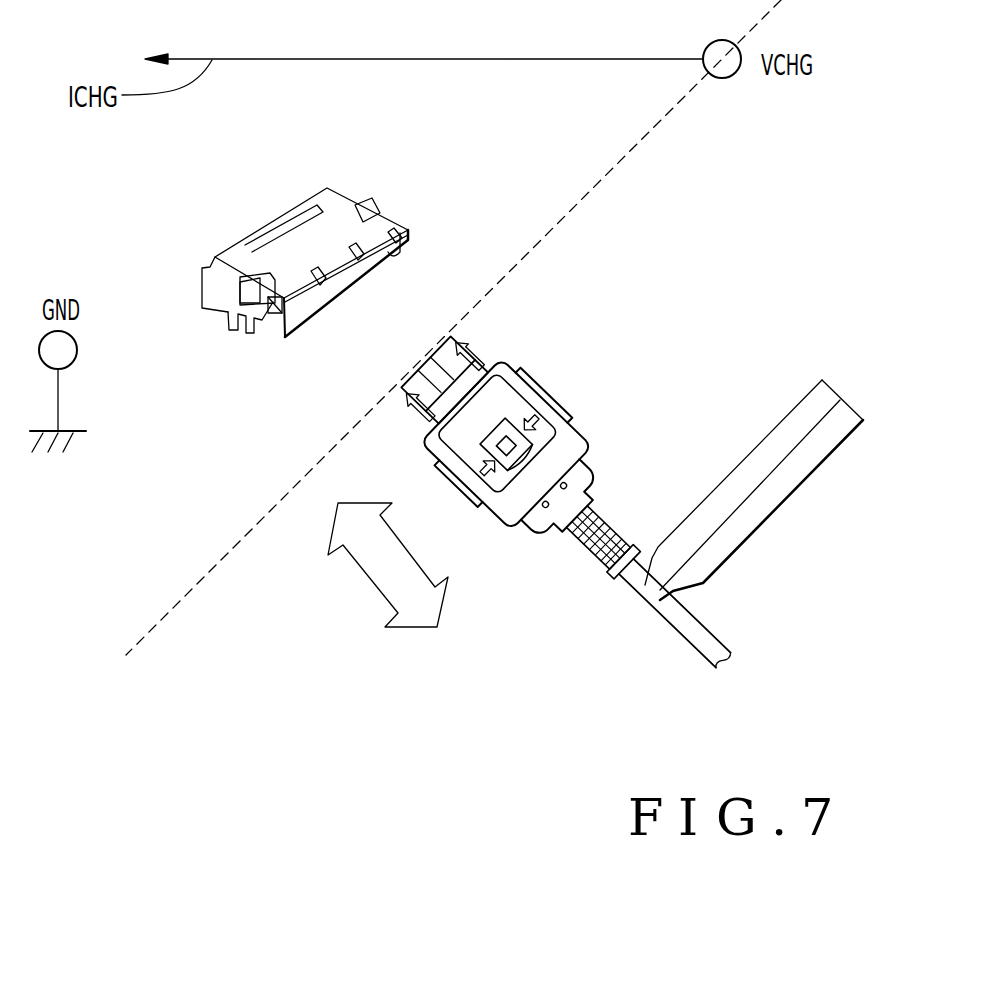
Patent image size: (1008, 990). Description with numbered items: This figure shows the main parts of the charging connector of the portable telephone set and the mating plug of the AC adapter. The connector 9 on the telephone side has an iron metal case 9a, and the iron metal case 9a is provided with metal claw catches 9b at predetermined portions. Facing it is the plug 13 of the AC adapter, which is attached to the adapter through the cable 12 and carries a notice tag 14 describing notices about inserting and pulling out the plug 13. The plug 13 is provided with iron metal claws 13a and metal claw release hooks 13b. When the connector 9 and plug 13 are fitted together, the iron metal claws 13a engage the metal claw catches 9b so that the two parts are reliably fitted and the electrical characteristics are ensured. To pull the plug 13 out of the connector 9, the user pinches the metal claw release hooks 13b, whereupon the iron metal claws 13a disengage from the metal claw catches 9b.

The connector 9 is at (216, 255).
The iron metal case 9a is at (228, 322).
The metal claw catches 9b is at (365, 207).
The cable 12 is at (707, 623).
The plug 13 is at (598, 460).
The iron metal claws 13a is at (422, 395).
The metal claw release hooks 13b is at (550, 428).
The notice tag 14 is at (810, 477).